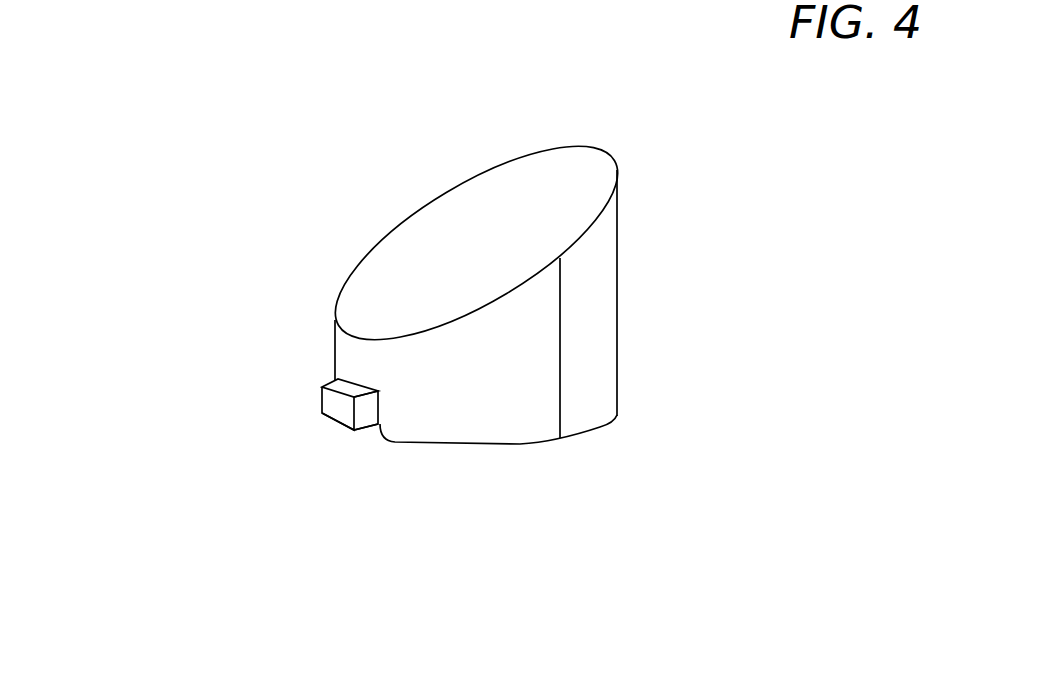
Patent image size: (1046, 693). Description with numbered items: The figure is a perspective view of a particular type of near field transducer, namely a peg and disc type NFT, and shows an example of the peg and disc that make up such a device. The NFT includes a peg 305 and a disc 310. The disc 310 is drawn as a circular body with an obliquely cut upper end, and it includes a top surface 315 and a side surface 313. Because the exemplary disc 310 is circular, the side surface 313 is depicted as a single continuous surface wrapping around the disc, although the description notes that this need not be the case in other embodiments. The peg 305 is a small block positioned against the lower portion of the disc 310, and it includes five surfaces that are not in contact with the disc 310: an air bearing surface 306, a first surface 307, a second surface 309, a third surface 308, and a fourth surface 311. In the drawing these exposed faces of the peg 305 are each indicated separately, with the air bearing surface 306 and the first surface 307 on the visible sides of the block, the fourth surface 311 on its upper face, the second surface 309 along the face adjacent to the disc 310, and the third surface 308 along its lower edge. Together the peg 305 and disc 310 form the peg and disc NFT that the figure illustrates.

The peg 305 is at (338, 433).
The air bearing surface 306 is at (337, 403).
The first surface 307 is at (367, 408).
The third surface 308 is at (353, 425).
The second surface 309 is at (343, 386).
The disc 310 is at (450, 230).
The fourth surface 311 is at (321, 389).
The side surface 313 is at (536, 345).
The top surface 315 is at (512, 239).